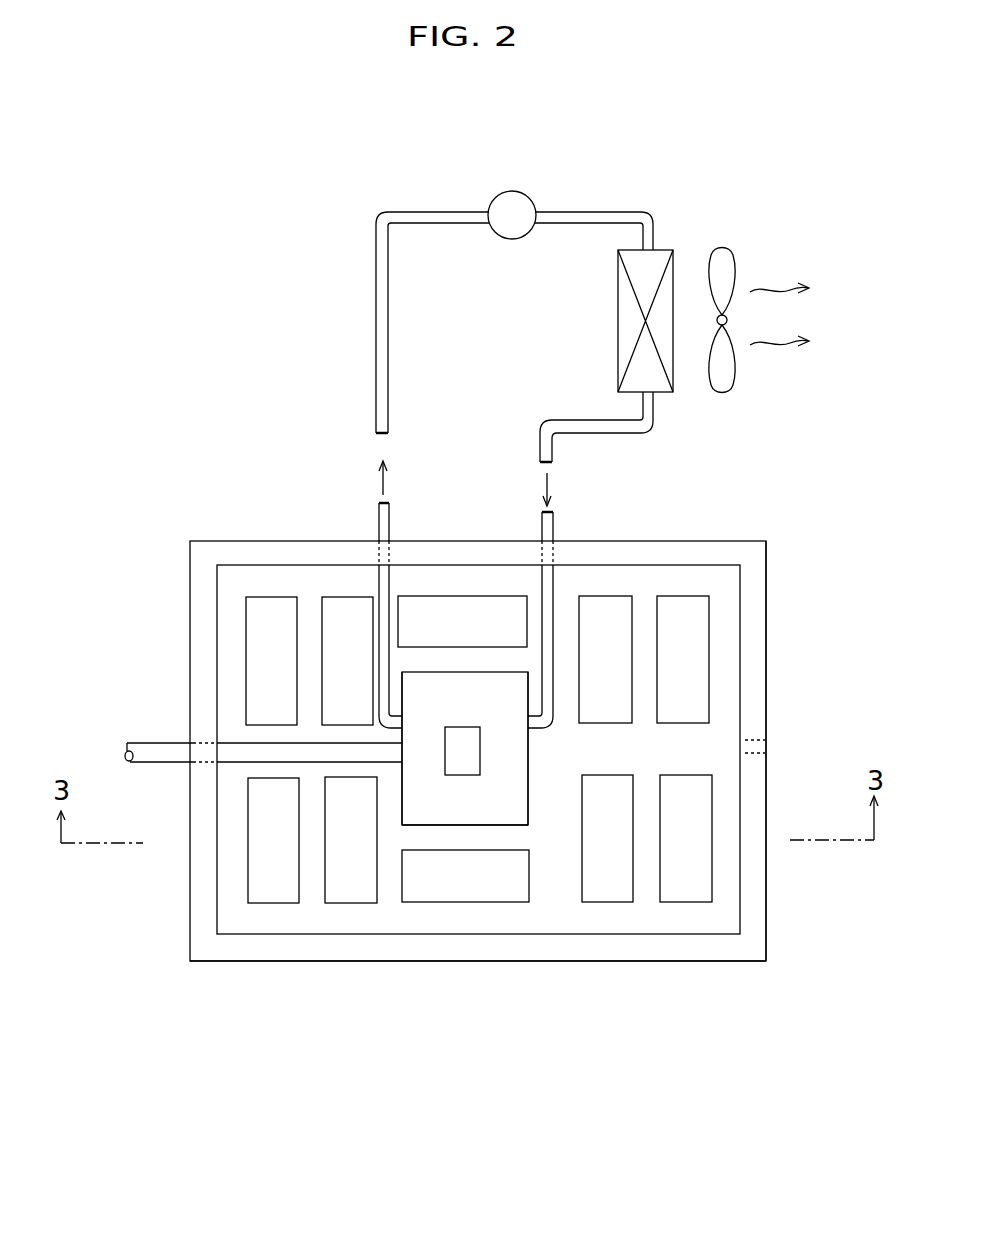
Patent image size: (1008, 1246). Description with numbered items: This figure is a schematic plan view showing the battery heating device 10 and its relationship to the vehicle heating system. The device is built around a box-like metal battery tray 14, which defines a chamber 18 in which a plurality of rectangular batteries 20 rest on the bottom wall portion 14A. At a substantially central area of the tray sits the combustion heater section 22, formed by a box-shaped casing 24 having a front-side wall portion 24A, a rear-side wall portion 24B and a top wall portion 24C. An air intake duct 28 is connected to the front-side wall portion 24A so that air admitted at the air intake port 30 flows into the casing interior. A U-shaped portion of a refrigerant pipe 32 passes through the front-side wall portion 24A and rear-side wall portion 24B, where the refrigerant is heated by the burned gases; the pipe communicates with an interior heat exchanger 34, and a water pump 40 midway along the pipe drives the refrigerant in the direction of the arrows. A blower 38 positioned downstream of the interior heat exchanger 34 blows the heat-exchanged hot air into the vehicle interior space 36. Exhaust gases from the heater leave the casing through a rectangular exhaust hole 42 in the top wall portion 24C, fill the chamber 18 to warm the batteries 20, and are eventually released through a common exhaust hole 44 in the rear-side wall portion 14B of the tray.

The battery heating device 10 is at (745, 513).
The battery tray 14 is at (766, 605).
The bottom wall portion 14A is at (693, 920).
The rear-side wall portion 14B is at (766, 873).
The chamber 18 is at (553, 917).
The batteries 20 is at (345, 607).
The combustion heater section 22 is at (398, 840).
The casing 24 is at (512, 832).
The front-side wall portion 24A is at (398, 792).
The rear-side wall portion 24B is at (530, 777).
The top wall portion 24C is at (458, 810).
The air intake duct 28 is at (237, 758).
The air intake port 30 is at (125, 755).
The refrigerant pipe 32 is at (378, 520).
The interior heat exchanger 34 is at (625, 312).
The vehicle interior space 36 is at (873, 328).
The blower 38 is at (730, 258).
The water pump 40 is at (521, 193).
The exhaust hole 42 is at (468, 740).
The exhaust hole 44 is at (767, 743).